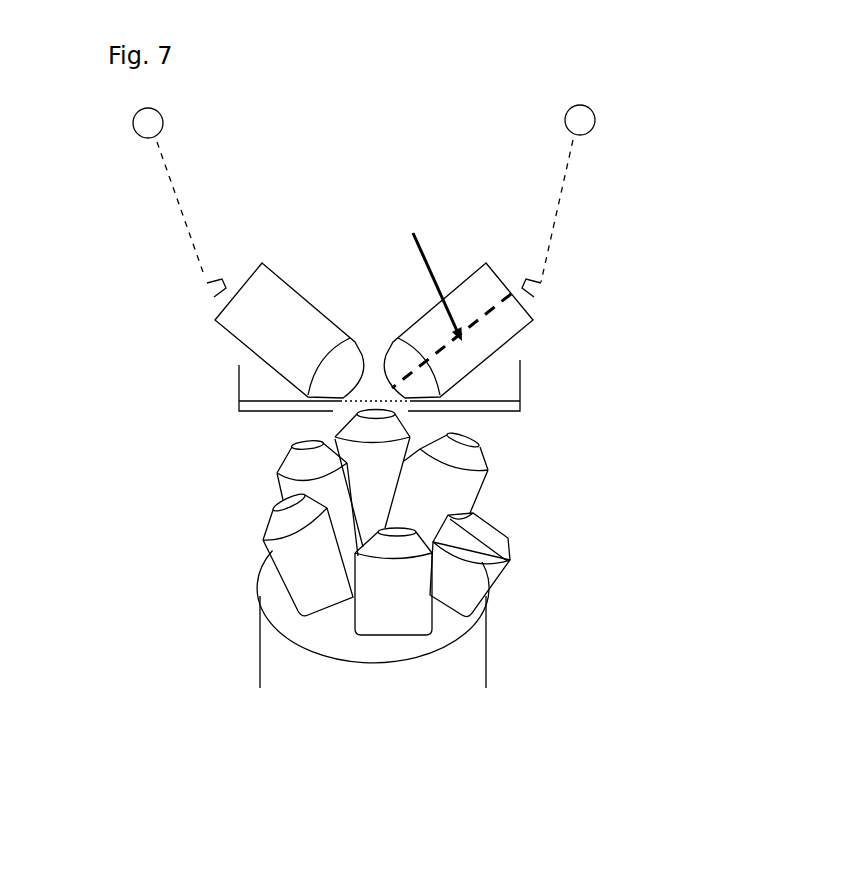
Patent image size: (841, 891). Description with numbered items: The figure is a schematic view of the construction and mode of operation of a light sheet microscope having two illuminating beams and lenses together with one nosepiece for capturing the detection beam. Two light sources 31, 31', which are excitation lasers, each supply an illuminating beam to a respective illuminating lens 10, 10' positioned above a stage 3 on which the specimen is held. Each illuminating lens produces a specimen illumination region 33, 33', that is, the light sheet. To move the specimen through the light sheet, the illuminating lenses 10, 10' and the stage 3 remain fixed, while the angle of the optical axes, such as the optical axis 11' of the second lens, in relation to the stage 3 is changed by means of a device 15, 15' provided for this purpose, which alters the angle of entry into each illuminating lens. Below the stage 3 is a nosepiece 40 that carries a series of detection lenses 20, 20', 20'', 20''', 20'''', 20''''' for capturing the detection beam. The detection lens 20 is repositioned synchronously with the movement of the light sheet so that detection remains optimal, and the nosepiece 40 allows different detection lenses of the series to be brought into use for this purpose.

The stage 3 is at (239, 403).
The illuminating lens 10 is at (289, 285).
The illuminating lens 10' is at (458, 280).
The optical axis 11' is at (451, 302).
The device for changing the angle 15 is at (181, 283).
The device for changing the angle 15' is at (577, 282).
The detection lens 20 is at (470, 479).
The detection lens 20' is at (505, 471).
The detection lens 20'' is at (519, 565).
The detection lens 20''' is at (393, 646).
The detection lens 20'''' is at (239, 561).
The detection lens 20''''' is at (248, 497).
The light source 31 is at (182, 106).
The light source 31' is at (615, 103).
The specimen illumination region 33 is at (112, 207).
The specimen illumination region 33' is at (628, 211).
The nosepiece 40 is at (455, 637).